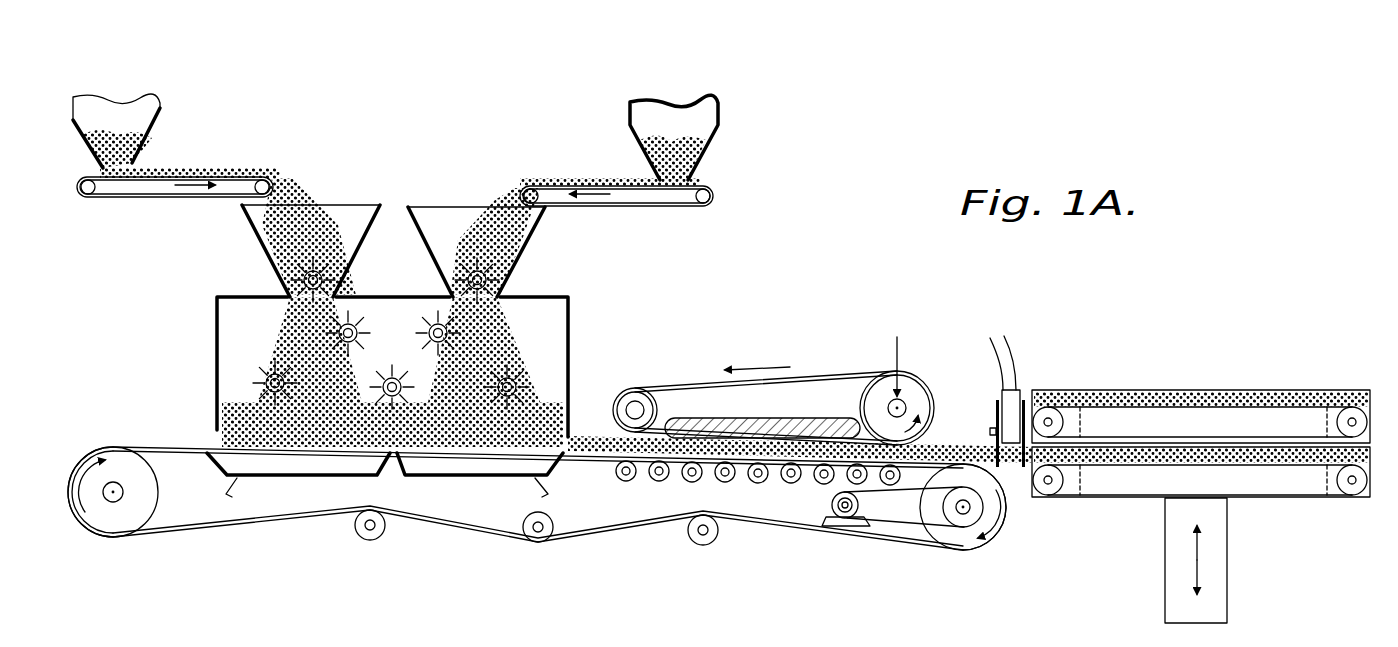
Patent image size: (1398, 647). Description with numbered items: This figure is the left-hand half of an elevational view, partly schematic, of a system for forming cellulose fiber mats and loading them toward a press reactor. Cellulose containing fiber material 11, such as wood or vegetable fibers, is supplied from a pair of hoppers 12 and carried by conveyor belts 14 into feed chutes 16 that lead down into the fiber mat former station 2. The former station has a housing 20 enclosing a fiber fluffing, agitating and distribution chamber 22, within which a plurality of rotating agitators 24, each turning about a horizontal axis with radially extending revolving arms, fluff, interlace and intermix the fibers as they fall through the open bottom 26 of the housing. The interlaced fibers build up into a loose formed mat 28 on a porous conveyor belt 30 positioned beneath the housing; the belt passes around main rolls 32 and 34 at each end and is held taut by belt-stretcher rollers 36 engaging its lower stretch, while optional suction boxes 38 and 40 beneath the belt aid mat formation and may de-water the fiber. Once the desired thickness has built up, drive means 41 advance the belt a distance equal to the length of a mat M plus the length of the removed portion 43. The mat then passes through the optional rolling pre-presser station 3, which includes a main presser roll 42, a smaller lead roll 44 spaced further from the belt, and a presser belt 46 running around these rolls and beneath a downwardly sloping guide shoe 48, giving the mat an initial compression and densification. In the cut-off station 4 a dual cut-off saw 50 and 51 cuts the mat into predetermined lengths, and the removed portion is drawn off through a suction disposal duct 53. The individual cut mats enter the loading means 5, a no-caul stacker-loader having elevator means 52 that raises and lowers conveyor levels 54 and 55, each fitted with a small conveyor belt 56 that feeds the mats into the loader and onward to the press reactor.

The fiber mat former station 2 is at (200, 337).
The mat pre-presser station 3 is at (808, 345).
The cut-off station 4 is at (1008, 305).
The loading means 5 is at (1205, 348).
The cellulose containing fiber material 11 is at (128, 151).
The hoppers 12 is at (150, 112).
The conveyor belts 14 is at (177, 198).
The feed chutes 16 is at (268, 258).
The housing 20 is at (215, 300).
The fiber fluffing, agitating and distribution chamber 22 is at (263, 329).
The rotating agitators 24 is at (438, 313).
The open bottom 26 is at (245, 425).
The loose formed mat 28 is at (583, 437).
The porous conveyor belt 30 is at (198, 447).
The main roll 32 is at (137, 503).
The main roll 34 is at (960, 537).
The belt-stretcher rollers 36 is at (375, 535).
The suction box 38 is at (300, 478).
The suction box 40 is at (445, 478).
The drive means 41 is at (833, 505).
The main presser roll 42 is at (910, 393).
The removed portion 43 is at (1013, 458).
The lead roll 44 is at (648, 398).
The presser belt 46 is at (838, 372).
The guide shoe 48 is at (774, 423).
The cut-off saw 50 is at (993, 407).
The cut-off saw 51 is at (1025, 397).
The elevator means 52 is at (1228, 597).
The suction disposal duct 53 is at (1007, 343).
The conveyor level 54 is at (1288, 423).
The conveyor level 55 is at (1142, 415).
The small conveyor belt 56 is at (1122, 480).
The mat M is at (1230, 400).